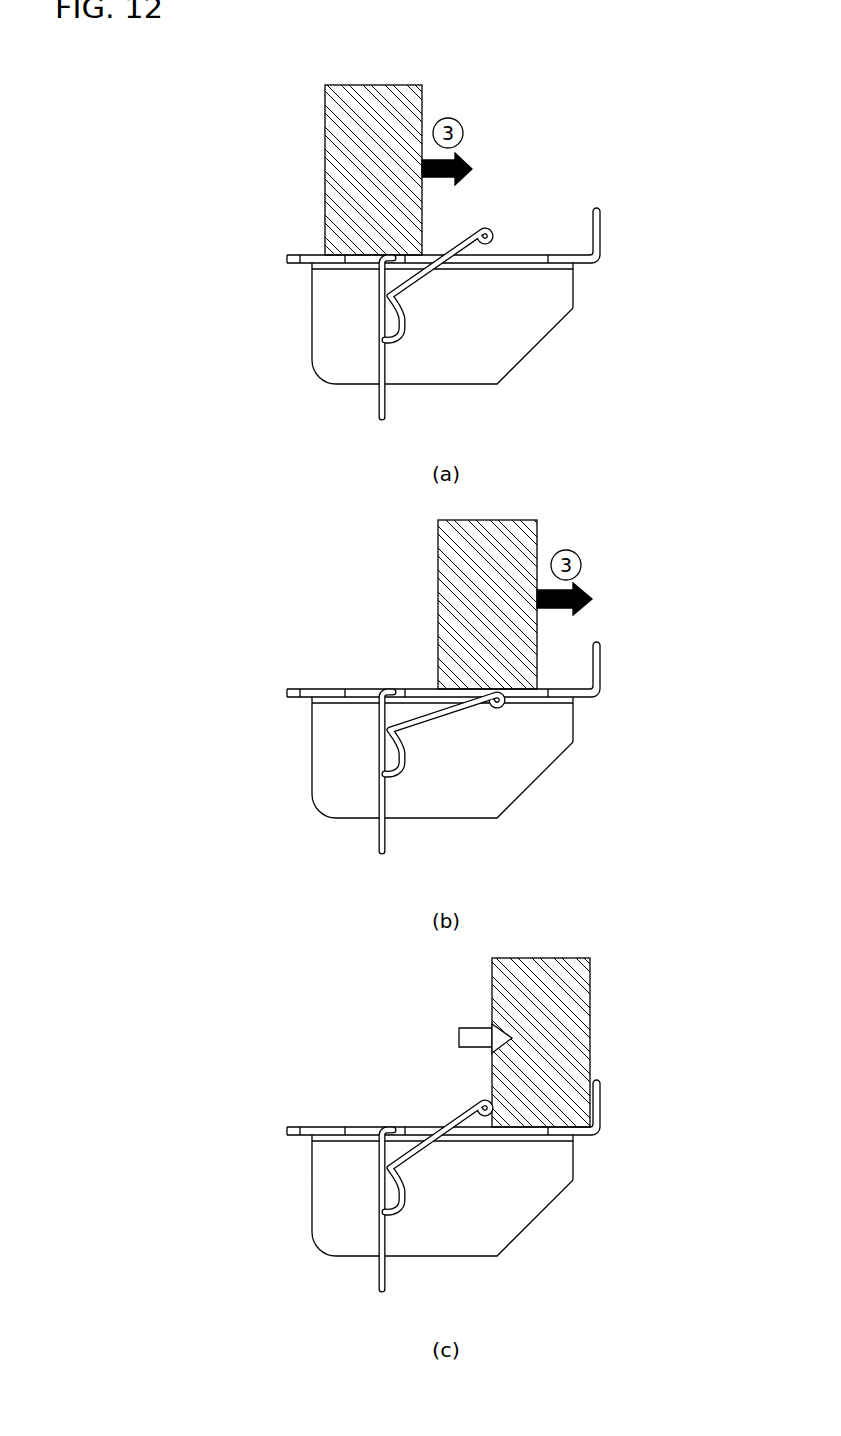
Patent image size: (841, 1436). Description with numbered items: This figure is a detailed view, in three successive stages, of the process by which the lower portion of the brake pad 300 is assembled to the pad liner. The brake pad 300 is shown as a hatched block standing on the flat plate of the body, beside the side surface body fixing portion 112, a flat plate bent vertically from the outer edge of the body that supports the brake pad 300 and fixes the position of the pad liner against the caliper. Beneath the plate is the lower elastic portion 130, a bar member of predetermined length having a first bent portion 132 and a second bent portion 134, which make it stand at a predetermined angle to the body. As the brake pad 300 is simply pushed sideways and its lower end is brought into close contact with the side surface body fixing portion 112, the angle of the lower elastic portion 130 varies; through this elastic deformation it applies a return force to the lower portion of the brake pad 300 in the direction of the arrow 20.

The brake pad 300 is at (327, 177).
The side surface body fixing portion 112 is at (601, 228).
The lower elastic portion 130 is at (420, 278).
The first bent portion 132 is at (388, 340).
The second bent portion 134 is at (387, 298).
The arrow 20 is at (458, 1034).